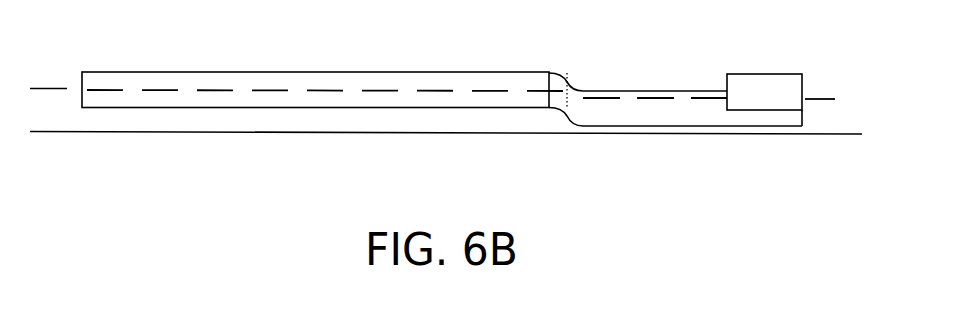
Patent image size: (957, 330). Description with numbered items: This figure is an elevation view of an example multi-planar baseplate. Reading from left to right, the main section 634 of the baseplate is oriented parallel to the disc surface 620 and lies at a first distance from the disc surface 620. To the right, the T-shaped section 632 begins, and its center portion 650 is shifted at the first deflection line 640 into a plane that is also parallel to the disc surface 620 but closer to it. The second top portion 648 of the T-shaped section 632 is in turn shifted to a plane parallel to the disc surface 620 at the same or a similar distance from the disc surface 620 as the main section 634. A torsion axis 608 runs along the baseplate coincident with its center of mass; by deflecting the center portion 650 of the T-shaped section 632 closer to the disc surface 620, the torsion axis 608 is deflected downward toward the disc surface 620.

The torsion axis 608 is at (51, 88).
The main section 634 is at (323, 72).
The first deflection line 640 is at (568, 97).
The center portion 650 is at (673, 126).
The second top portion 648 is at (781, 104).
The disc surface 620 is at (550, 133).
The T-shaped section 632 is at (826, 53).